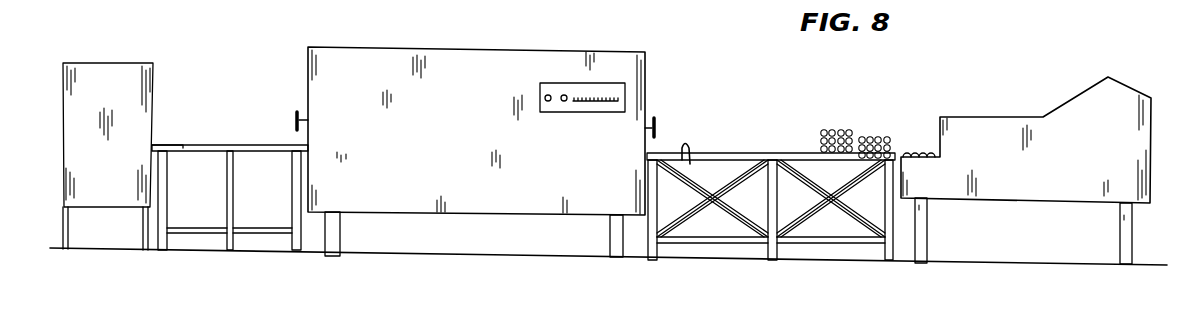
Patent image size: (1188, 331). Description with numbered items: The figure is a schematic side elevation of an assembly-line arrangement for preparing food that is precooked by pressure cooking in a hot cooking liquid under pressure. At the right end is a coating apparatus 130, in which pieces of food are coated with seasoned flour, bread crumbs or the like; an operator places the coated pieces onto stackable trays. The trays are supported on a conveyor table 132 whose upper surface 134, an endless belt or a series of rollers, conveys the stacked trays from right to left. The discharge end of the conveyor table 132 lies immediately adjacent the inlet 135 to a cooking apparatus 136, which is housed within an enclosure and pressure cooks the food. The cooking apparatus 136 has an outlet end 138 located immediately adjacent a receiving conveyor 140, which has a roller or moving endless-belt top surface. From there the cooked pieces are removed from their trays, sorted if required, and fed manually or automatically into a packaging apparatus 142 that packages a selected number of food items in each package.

The coating apparatus 130 is at (1079, 194).
The conveyor table 132 is at (740, 152).
The upper surface 134 is at (707, 166).
The inlet 135 is at (657, 122).
The cooking apparatus 136 is at (450, 152).
The outlet end 138 is at (296, 112).
The receiving conveyor 140 is at (241, 150).
The packaging apparatus 142 is at (120, 178).